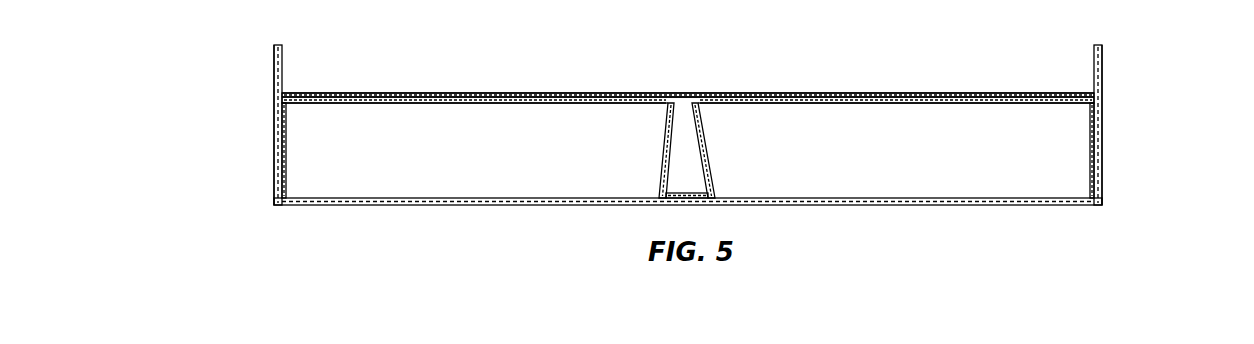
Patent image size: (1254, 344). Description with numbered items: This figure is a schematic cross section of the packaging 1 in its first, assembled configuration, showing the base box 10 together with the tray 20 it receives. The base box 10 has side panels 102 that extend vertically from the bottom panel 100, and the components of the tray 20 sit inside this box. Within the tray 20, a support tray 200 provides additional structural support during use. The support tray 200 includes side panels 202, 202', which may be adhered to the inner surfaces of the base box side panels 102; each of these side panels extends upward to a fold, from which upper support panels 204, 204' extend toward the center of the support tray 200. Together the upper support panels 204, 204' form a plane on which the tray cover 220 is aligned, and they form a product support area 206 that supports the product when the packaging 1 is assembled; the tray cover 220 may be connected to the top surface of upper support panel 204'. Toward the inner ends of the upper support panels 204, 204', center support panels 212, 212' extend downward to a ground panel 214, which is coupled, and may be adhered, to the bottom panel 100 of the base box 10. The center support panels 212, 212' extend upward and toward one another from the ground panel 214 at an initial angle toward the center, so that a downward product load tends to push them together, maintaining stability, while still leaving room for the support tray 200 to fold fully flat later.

The packaging 1 is at (155, 83).
The base box 10 is at (246, 183).
The tray 20 is at (425, 76).
The bottom panel 100 is at (417, 206).
The side panels 102 is at (274, 128).
The support tray 200 is at (838, 120).
The side panel 202 is at (1055, 150).
The side panel 202' is at (323, 150).
The upper support panel 204 is at (897, 132).
The upper support panel 204' is at (474, 130).
The product support area 206 is at (672, 75).
The center support panel 212 is at (740, 150).
The center support panel 212' is at (631, 150).
The ground panel 214 is at (688, 195).
The tray cover 220 is at (520, 93).